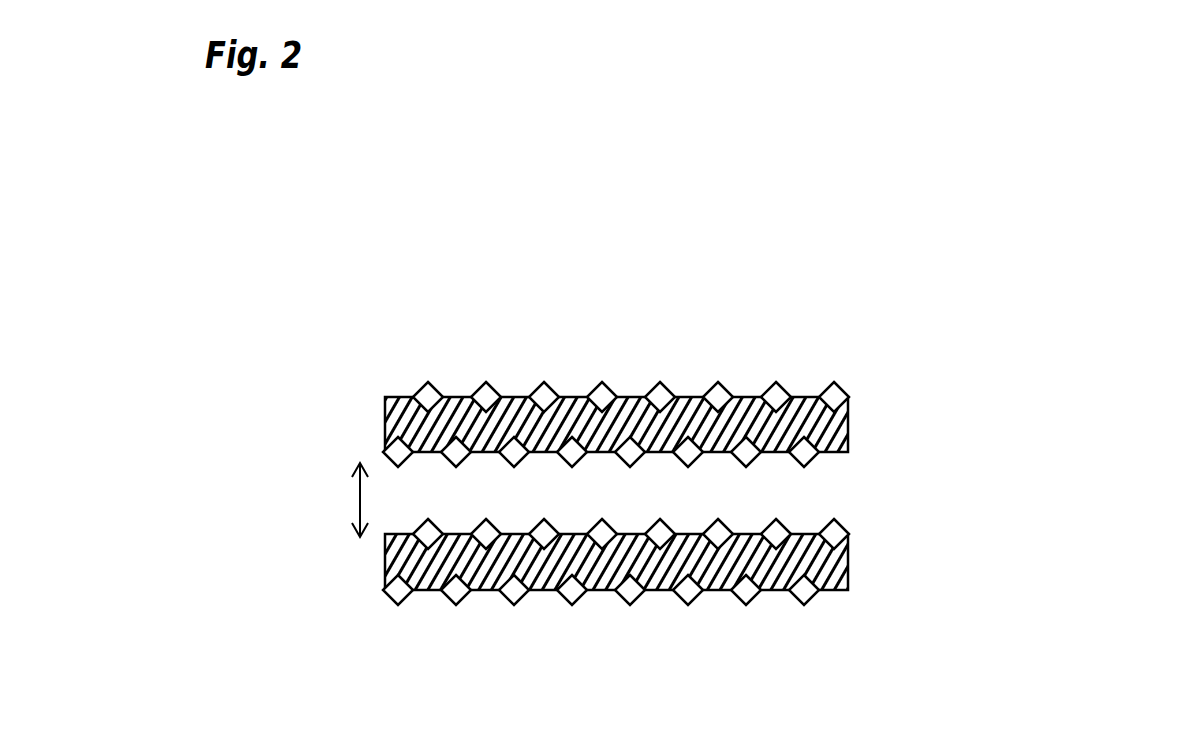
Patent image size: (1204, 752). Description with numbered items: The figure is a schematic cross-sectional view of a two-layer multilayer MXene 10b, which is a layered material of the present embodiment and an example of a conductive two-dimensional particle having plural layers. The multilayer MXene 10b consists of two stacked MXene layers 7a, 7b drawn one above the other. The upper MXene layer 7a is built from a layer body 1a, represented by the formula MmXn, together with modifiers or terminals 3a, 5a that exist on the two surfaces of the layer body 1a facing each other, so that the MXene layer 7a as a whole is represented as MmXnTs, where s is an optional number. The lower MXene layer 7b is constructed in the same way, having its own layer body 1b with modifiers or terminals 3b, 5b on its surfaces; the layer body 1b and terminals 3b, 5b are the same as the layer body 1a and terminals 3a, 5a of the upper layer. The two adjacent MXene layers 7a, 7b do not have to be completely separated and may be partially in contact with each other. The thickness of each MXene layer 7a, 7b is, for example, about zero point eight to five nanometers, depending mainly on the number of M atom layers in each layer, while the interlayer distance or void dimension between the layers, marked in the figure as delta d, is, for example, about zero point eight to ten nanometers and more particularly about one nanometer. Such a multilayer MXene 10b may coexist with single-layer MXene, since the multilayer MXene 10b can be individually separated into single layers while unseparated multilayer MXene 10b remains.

The layer body 1a is at (848, 413).
The modifier or terminal 3a is at (834, 397).
The modifier or terminal 5a is at (804, 455).
The MXene layer 7a is at (1002, 368).
The layer body 1b is at (848, 549).
The modifier or terminal 3b is at (834, 534).
The modifier or terminal 5b is at (804, 593).
The MXene layer 7b is at (1002, 503).
The multilayer MXene 10b is at (1050, 620).